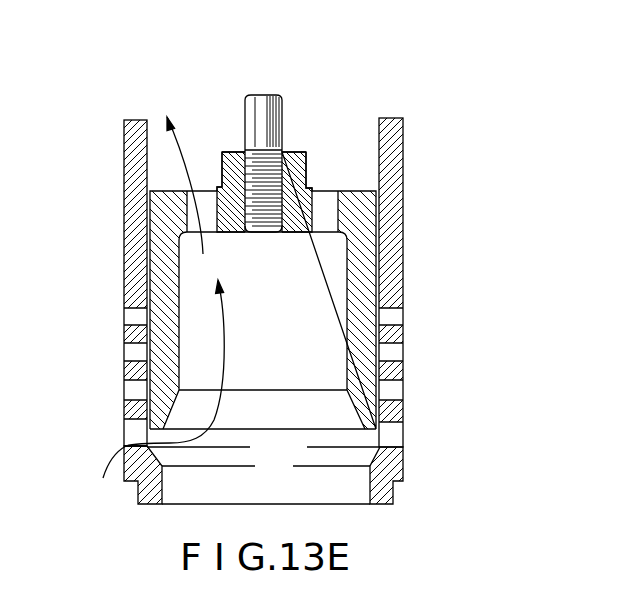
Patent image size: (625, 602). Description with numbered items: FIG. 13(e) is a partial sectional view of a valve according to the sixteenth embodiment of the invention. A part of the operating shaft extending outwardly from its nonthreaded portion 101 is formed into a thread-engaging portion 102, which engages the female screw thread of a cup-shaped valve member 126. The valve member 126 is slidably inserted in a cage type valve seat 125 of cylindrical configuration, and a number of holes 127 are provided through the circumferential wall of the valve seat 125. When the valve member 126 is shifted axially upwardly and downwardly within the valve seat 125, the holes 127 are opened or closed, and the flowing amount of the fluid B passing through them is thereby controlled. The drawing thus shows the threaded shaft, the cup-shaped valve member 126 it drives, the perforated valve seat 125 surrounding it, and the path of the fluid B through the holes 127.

The nonthreaded portion 101 is at (257, 93).
The thread-engaging portion 102 is at (270, 233).
The cage type valve seat 125 is at (404, 148).
The cup-shaped valve member 126 is at (337, 121).
The holes 127 is at (128, 428).
The fluid B is at (163, 297).